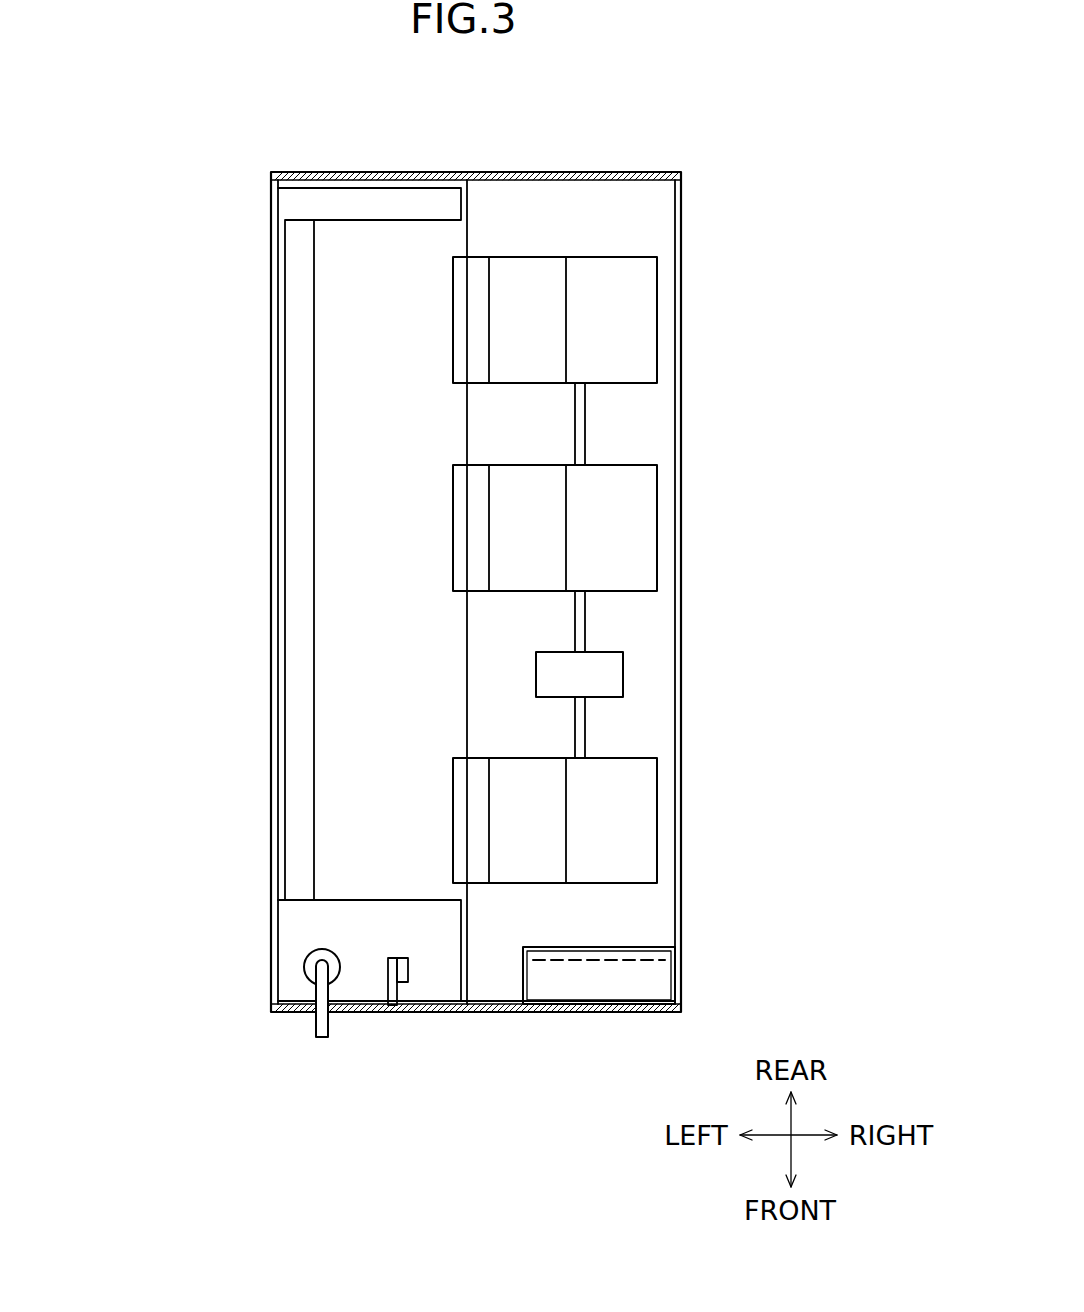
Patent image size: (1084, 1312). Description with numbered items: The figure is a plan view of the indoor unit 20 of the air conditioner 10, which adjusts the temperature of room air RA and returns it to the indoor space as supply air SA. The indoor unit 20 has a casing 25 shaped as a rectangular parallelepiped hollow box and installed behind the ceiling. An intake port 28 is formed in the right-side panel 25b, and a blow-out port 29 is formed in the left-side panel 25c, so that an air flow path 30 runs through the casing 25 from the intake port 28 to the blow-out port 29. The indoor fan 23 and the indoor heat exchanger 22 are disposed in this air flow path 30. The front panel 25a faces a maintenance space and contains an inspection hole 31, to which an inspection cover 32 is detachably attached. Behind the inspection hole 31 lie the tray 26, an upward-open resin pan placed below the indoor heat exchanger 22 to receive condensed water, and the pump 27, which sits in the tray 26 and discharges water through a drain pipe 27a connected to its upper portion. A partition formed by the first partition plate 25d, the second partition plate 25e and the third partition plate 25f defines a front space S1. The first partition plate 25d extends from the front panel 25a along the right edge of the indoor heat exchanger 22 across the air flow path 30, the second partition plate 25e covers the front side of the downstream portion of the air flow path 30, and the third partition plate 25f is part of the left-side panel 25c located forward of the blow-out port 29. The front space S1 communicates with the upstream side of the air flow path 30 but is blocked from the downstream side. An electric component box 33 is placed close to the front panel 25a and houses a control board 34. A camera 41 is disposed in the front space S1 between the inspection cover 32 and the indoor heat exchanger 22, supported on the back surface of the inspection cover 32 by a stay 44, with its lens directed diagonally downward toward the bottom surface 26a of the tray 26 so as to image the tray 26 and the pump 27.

The air conditioner 10 is at (405, 546).
The indoor unit 20 is at (405, 546).
The indoor heat exchanger 22 is at (433, 636).
The indoor fan 23 is at (657, 528).
The casing 25 is at (352, 165).
The front panel 25a is at (498, 1012).
The right-side panel 25b is at (681, 1005).
The left-side panel 25c is at (271, 1005).
The first partition plate 25d is at (468, 976).
The second partition plate 25e is at (303, 900).
The third partition plate 25f is at (271, 952).
The tray 26 is at (432, 935).
The bottom surface 26a is at (290, 985).
The pump 27 is at (323, 950).
The drain pipe 27a is at (316, 1030).
The intake port 28 is at (681, 718).
The blow-out port 29 is at (271, 720).
The air flow path 30 is at (489, 702).
The inspection hole 31 is at (375, 1012).
The inspection cover 32 is at (408, 1012).
The electric component box 33 is at (677, 968).
The control board 34 is at (608, 962).
The camera 41 is at (410, 965).
The stay 44 is at (400, 992).
The front space S1 is at (362, 947).
The supply air SA is at (262, 615).
The room air RA is at (690, 612).